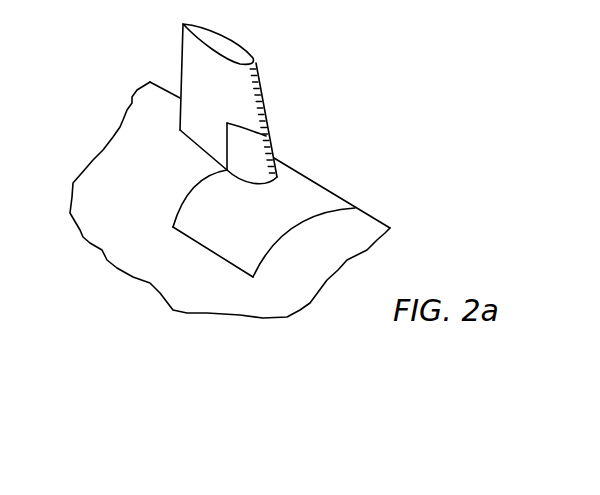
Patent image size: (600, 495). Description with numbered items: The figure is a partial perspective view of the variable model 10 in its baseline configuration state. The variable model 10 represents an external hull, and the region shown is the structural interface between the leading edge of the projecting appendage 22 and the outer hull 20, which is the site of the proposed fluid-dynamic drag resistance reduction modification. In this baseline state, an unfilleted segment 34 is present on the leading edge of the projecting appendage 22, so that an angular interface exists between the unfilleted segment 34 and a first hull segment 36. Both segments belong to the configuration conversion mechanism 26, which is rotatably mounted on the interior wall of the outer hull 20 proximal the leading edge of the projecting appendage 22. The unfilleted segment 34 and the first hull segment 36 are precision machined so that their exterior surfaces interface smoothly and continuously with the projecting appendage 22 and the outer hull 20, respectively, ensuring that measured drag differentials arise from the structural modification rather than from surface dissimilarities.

The variable model 10 is at (273, 144).
The outer hull 20 is at (100, 170).
The projecting appendage 22 is at (256, 82).
The configuration conversion mechanism 26 is at (351, 183).
The unfilleted segment 34 is at (274, 156).
The first hull segment 36 is at (190, 220).